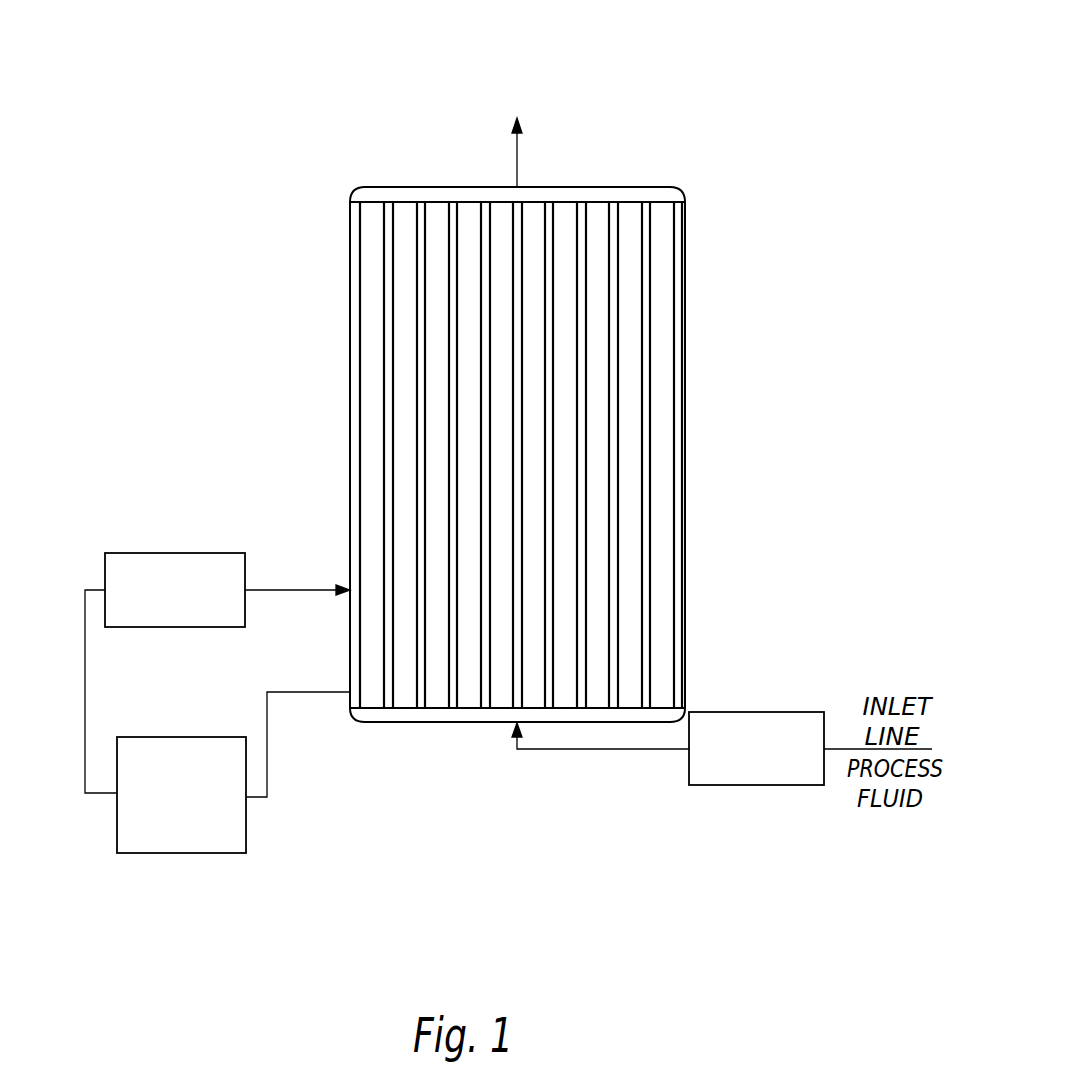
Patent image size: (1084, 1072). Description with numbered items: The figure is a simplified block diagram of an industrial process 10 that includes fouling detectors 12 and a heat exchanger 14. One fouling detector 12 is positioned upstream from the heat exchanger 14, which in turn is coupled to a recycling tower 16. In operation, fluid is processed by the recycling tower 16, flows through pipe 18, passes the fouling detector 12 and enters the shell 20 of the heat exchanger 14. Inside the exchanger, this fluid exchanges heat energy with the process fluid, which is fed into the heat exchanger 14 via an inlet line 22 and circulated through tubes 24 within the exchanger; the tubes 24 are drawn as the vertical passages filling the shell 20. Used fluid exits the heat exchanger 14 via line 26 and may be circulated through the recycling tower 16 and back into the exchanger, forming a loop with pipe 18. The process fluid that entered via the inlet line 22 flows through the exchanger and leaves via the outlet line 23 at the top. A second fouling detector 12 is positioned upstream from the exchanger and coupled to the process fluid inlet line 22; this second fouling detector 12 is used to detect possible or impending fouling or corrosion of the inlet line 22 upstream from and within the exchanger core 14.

The industrial process 10 is at (570, 367).
The fouling detector 12 is at (155, 553).
The heat exchanger 14 is at (570, 454).
The recycling tower 16 is at (205, 853).
The pipe 18 is at (85, 710).
The shell 20 is at (348, 413).
The inlet line 22 is at (572, 750).
The outlet line 23 is at (518, 166).
The tubes 24 is at (613, 477).
The line 26 is at (255, 800).